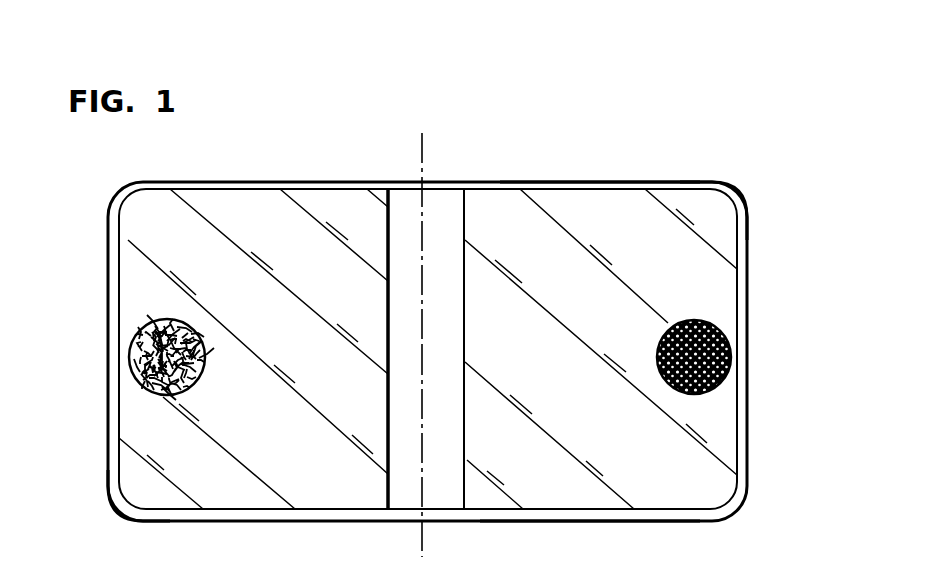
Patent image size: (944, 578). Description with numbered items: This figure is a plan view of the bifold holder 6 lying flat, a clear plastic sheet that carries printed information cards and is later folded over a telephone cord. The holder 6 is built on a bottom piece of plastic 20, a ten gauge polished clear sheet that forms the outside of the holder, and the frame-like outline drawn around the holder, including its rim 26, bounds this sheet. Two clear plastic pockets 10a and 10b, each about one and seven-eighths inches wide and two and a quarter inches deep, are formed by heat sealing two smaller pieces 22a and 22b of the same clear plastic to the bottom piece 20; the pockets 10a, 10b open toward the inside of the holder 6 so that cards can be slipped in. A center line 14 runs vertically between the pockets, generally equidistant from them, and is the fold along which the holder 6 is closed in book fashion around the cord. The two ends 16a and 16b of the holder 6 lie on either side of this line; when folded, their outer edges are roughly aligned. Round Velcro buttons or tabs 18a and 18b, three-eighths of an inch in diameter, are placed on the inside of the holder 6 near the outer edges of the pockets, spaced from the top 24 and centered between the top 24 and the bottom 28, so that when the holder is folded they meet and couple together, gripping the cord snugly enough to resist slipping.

The holder 6 is at (301, 173).
The pocket 10a is at (412, 216).
The pocket 10b is at (452, 258).
The center line 14 is at (420, 535).
The end 16a is at (130, 222).
The end 16b is at (713, 264).
The Velcro button 18a is at (138, 345).
The Velcro button 18b is at (718, 384).
The bottom piece of plastic 20 is at (442, 492).
The smaller piece 22a is at (153, 481).
The smaller piece 22b is at (687, 152).
The top 24 is at (582, 183).
The frame rim 26 is at (108, 420).
The bottom 28 is at (620, 519).